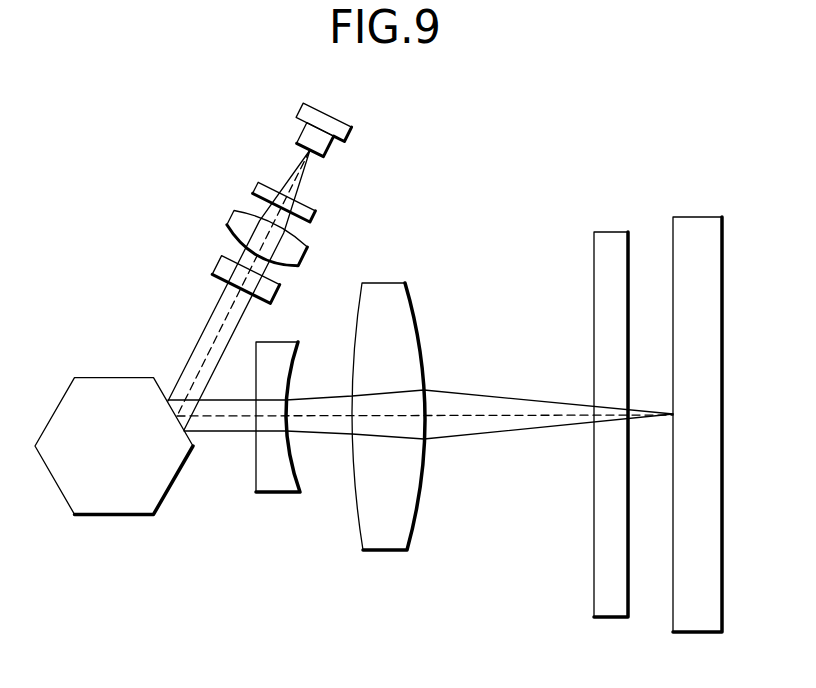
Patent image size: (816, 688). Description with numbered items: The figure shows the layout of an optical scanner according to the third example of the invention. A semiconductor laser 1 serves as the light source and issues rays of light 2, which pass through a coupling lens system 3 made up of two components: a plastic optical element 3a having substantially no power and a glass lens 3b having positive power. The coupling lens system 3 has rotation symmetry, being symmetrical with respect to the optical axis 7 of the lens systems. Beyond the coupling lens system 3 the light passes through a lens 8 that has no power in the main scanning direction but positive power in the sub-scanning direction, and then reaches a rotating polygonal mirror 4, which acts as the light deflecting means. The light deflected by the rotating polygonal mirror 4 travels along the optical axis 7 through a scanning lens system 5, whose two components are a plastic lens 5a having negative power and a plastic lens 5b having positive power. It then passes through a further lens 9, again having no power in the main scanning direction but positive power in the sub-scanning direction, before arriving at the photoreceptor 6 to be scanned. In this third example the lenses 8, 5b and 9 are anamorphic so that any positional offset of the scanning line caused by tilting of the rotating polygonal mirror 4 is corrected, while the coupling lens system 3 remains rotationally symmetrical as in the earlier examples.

The semiconductor laser 1 is at (303, 131).
The rays of light 2 is at (291, 178).
The coupling lens system 3 is at (230, 196).
The plastic optical element 3a is at (256, 186).
The glass lens 3b is at (242, 217).
The lens 8 is at (221, 258).
The rotating polygonal mirror 4 is at (108, 378).
The optical axis 7 is at (537, 415).
The scanning lens system 5 is at (340, 478).
The plastic lens 5a is at (294, 493).
The plastic lens 5b is at (388, 457).
The lens 9 is at (594, 258).
The photoreceptor 6 is at (722, 256).